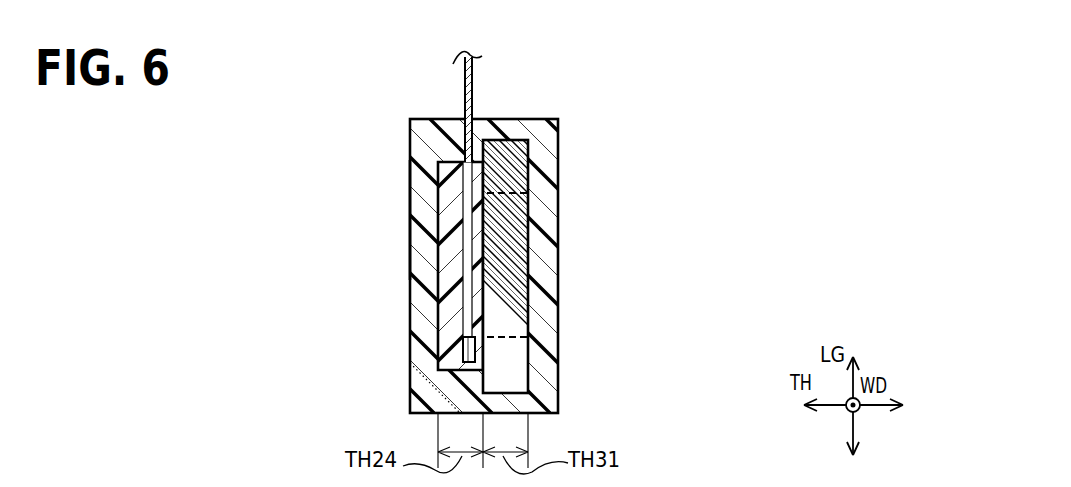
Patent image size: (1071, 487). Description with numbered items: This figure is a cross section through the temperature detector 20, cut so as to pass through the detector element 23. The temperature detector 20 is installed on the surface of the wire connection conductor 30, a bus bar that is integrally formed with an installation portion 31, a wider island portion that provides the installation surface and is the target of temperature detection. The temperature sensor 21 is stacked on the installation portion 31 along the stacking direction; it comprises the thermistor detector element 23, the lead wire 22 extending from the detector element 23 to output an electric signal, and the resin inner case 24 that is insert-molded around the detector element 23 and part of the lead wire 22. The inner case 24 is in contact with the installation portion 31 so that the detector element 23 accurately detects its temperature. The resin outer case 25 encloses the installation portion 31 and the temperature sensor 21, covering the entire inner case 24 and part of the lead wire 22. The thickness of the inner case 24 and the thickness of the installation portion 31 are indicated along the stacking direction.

The temperature detector 20 is at (385, 103).
The temperature sensor 21 is at (428, 194).
The lead wire 22 is at (458, 62).
The detector element 23 is at (465, 350).
The inner case 24 is at (410, 276).
The outer case 25 is at (410, 217).
The wire connection conductor 30 is at (505, 193).
The installation portion 31 is at (528, 266).